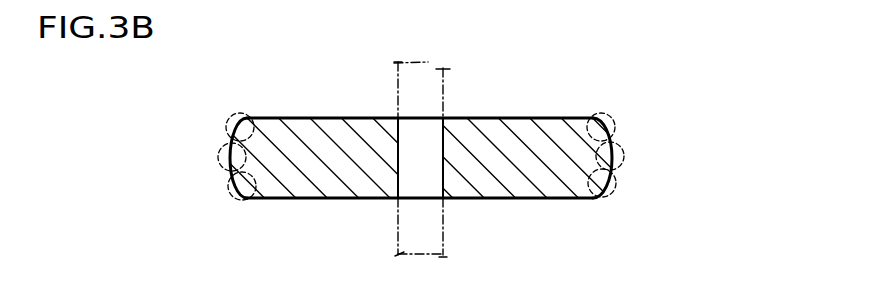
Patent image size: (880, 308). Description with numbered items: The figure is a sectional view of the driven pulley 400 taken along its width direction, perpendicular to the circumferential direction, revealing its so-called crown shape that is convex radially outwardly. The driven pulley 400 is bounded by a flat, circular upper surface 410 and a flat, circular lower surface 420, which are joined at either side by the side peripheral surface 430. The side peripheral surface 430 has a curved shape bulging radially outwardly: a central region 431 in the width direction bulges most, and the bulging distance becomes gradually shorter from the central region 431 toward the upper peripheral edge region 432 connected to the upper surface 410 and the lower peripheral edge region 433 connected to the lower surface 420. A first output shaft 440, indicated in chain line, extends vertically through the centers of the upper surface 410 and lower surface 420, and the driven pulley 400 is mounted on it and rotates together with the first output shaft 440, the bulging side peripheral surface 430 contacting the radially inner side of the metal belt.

The driven pulley 400 is at (555, 75).
The upper surface 410 is at (326, 117).
The lower surface 420 is at (325, 200).
The side peripheral surface 430 is at (130, 93).
The central region 431 is at (227, 147).
The upper peripheral edge region 432 is at (237, 122).
The lower peripheral edge region 433 is at (237, 183).
The first output shaft 440 is at (445, 70).